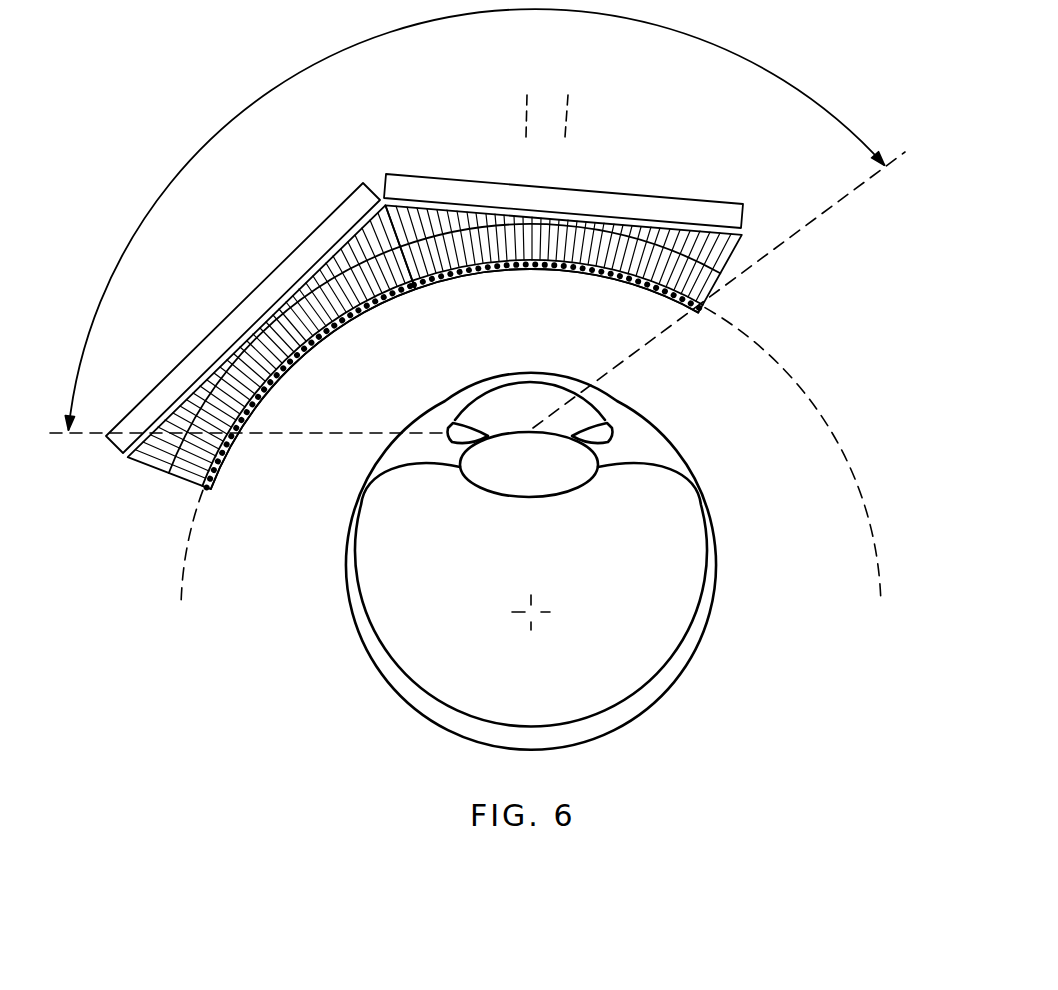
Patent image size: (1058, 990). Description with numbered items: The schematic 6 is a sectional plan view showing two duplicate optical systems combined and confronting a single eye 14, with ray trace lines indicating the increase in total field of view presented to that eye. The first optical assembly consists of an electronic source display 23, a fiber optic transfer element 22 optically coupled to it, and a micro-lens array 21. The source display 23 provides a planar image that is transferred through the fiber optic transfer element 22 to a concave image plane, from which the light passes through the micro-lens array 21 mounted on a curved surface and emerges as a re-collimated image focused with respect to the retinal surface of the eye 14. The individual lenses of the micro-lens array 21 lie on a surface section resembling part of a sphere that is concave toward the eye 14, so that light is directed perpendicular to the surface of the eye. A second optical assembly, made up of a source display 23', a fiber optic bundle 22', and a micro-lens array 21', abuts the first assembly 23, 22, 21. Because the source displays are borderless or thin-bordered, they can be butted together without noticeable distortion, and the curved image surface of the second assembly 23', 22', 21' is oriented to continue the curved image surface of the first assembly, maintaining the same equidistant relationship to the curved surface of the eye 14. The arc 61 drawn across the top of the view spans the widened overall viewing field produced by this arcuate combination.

The schematic 6 is at (815, 668).
The eye 14 is at (700, 507).
The micro-lens array 21 is at (574, 325).
The micro-lens array 21' is at (308, 433).
The fiber optic transfer element 22 is at (608, 258).
The fiber optic bundle 22' is at (237, 368).
The electronic source display 23 is at (565, 182).
The source display 23' is at (243, 318).
The scanning arc 61 is at (307, 70).